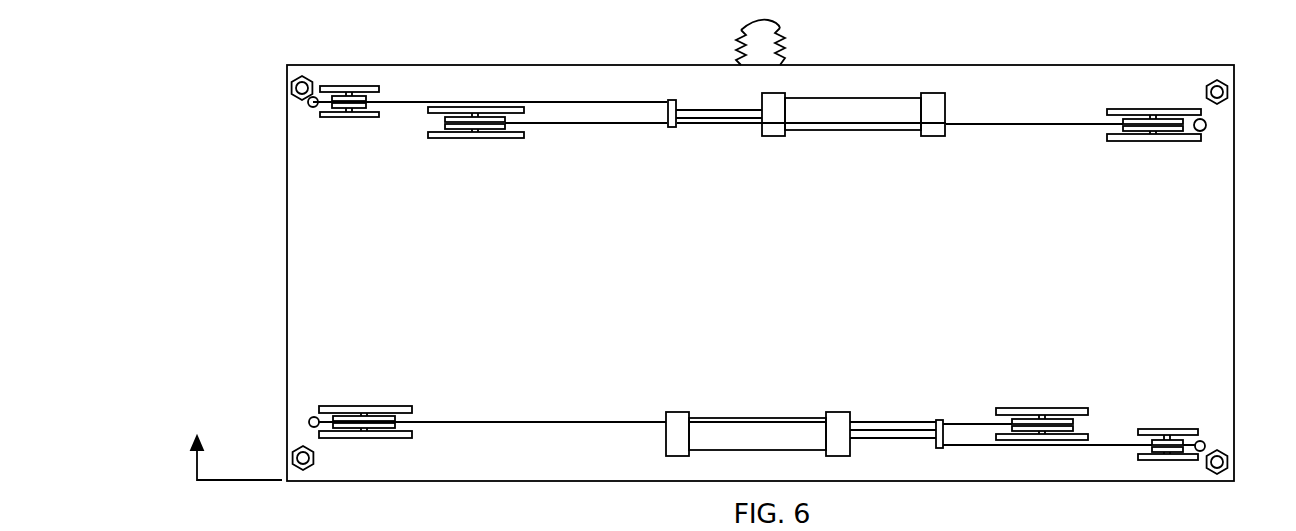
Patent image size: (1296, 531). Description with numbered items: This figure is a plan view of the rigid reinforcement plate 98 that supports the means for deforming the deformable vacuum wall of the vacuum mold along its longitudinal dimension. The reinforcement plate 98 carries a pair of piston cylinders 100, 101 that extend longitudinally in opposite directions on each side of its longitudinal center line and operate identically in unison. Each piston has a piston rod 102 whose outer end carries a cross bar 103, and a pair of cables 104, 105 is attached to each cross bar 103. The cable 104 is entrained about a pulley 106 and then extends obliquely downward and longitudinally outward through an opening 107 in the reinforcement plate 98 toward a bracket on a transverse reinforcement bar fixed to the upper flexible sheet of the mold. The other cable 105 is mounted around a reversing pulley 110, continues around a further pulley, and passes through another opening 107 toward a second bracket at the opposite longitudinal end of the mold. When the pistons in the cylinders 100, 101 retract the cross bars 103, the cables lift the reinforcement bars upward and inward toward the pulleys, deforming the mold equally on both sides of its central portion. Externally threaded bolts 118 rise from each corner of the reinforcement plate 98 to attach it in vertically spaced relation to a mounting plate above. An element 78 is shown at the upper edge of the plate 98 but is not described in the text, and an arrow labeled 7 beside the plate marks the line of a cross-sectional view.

The view direction arrow 7 is at (235, 473).
The spring 78 is at (784, 40).
The reinforcement plate 98 is at (298, 481).
The piston cylinder 100 is at (852, 130).
The piston cylinder 101 is at (748, 418).
The piston rod 102 is at (704, 110).
The cross bar 103 is at (672, 128).
The cable 104 is at (567, 101).
The cable 105 is at (585, 124).
The pulley 106 is at (358, 108).
The opening 107 is at (311, 107).
The reversing pulley 110 is at (1030, 420).
The externally threaded bolts 118 is at (294, 88).